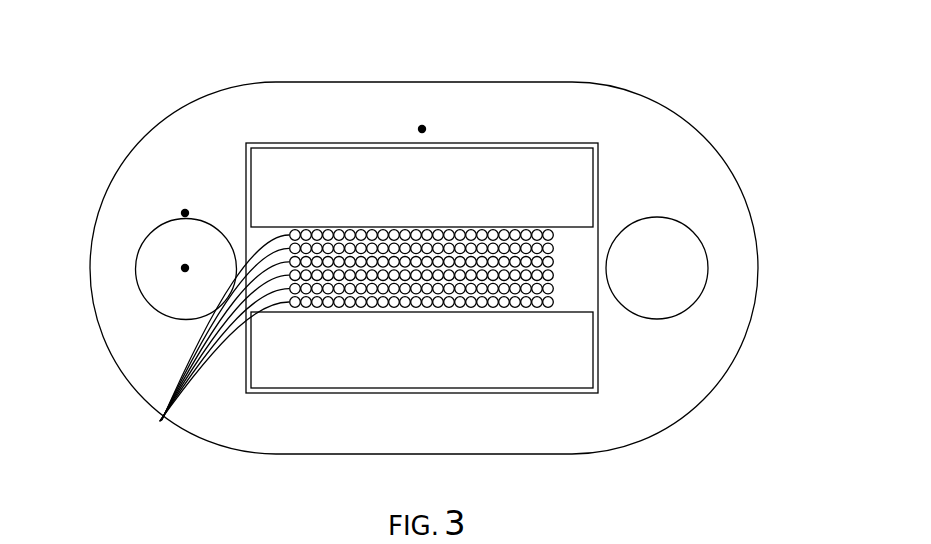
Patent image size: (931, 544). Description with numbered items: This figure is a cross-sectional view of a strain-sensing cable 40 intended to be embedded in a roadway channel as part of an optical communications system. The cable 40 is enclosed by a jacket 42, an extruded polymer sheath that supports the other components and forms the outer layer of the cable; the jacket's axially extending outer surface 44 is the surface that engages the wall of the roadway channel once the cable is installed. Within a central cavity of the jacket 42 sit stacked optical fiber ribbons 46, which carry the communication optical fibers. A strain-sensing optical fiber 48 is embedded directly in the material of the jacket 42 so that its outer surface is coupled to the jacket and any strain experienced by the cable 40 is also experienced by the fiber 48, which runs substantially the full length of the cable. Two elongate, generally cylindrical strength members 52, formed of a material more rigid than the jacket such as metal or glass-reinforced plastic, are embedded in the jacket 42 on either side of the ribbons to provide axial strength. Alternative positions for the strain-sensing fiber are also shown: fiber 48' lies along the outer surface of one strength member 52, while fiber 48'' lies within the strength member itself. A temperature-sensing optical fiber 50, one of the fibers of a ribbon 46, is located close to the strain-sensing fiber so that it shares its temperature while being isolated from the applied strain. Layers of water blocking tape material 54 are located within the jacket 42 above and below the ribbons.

The strain-sensing cable 40 is at (451, 244).
The jacket 42 is at (642, 120).
The outer surface 44 is at (775, 289).
The optical fiber ribbons 46 is at (162, 420).
The strain-sensing optical fiber 48 is at (454, 82).
The strain-sensing optical fiber 48' is at (126, 172).
The strain-sensing optical fiber 48'' is at (111, 307).
The temperature-sensing optical fiber 50 is at (548, 303).
The strength members 52 is at (148, 263).
The water blocking tape material 54 is at (551, 168).